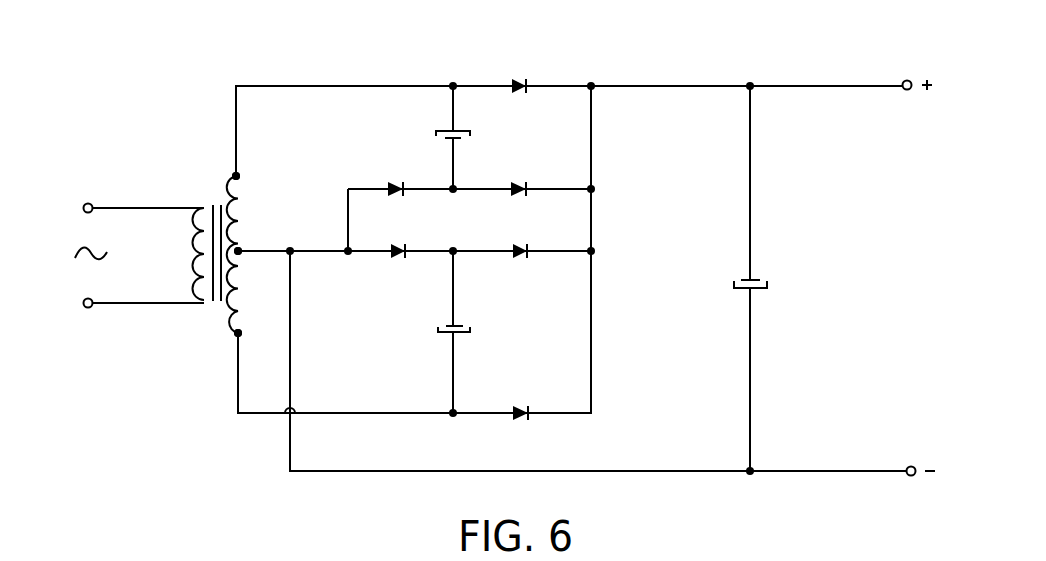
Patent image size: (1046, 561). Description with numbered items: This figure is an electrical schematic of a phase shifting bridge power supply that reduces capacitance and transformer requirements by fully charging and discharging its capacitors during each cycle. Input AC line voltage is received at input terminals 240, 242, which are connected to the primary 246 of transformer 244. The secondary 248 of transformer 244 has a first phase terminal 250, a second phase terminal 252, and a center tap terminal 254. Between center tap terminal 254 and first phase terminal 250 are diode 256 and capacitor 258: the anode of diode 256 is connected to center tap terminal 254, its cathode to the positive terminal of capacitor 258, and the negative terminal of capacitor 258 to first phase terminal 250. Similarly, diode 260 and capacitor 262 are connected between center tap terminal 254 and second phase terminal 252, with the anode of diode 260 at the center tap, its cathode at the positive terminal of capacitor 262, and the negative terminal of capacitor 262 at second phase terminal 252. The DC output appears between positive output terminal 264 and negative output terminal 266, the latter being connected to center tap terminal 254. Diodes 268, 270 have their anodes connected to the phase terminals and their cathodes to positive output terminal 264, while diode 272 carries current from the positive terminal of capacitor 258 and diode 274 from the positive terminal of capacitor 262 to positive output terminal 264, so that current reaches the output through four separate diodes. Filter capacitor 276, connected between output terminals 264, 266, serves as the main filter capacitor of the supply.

The input terminal 240 is at (85, 203).
The input terminal 242 is at (92, 307).
The transformer 244 is at (213, 182).
The primary 246 is at (203, 204).
The secondary 248 is at (240, 208).
The first phase terminal 250 is at (237, 176).
The second phase terminal 252 is at (240, 334).
The center tap terminal 254 is at (239, 252).
The diode 256 is at (392, 181).
The capacitor 258 is at (471, 132).
The diode 260 is at (398, 244).
The capacitor 262 is at (472, 331).
The positive output terminal 264 is at (904, 80).
The negative output terminal 266 is at (907, 466).
The diode 268 is at (516, 79).
The diode 270 is at (516, 420).
The diode 272 is at (516, 182).
The diode 274 is at (518, 244).
The filter capacitor 276 is at (768, 287).